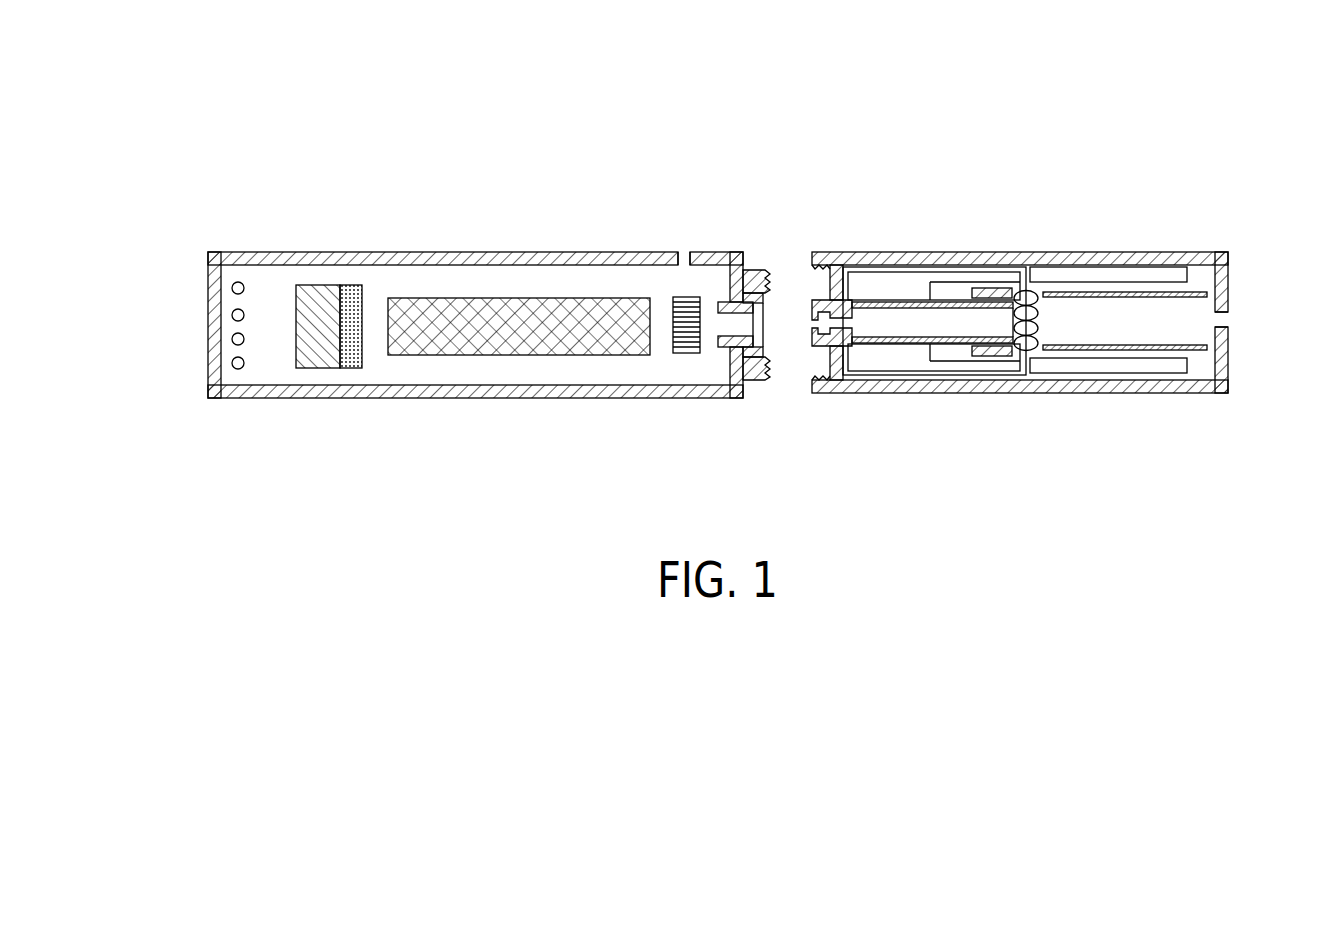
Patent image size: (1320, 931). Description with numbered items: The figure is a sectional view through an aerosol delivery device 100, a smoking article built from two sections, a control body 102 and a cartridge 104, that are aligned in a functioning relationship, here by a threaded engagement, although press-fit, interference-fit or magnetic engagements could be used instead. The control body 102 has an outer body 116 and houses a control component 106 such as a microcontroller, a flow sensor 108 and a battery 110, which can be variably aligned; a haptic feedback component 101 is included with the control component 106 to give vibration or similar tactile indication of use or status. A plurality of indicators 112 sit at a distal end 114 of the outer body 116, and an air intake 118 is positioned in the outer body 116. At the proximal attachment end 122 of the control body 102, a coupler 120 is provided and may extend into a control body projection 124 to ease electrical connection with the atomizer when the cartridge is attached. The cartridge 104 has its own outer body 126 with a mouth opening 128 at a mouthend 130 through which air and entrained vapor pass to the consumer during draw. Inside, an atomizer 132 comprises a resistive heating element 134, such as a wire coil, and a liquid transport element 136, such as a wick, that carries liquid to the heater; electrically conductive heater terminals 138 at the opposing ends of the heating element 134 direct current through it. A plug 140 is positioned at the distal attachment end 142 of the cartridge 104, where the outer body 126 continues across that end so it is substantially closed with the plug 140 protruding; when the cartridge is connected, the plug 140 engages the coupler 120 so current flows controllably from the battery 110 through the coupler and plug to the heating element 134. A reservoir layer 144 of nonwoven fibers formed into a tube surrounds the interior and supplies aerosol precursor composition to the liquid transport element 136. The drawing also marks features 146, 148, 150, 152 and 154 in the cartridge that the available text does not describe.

The aerosol delivery device 100 is at (195, 68).
The haptic feedback component 101 is at (352, 290).
The control body 102 is at (305, 437).
The cartridge 104 is at (1034, 446).
The control component 106 is at (320, 290).
The flow sensor 108 is at (686, 298).
The battery 110 is at (520, 312).
The indicators 112 is at (231, 339).
The distal end 114 is at (217, 203).
The outer body 116 is at (440, 398).
The air intake 118 is at (683, 252).
The coupler 120 is at (721, 342).
The proximal attachment end 122 is at (759, 236).
The control body projection 124 is at (762, 364).
The outer body 126 is at (1012, 393).
The mouth opening 128 is at (1232, 320).
The mouthend 130 is at (1243, 252).
The atomizer 132 is at (1050, 353).
The resistive heating element 134 is at (1032, 293).
The liquid transport element 136 is at (1010, 282).
The heater terminals 138 is at (995, 283).
The plug 140 is at (818, 360).
The distal attachment end 142 is at (804, 238).
The reservoir layer 144 is at (920, 275).
The air flow path 146 is at (1044, 364).
The inner tube 148 is at (947, 326).
The inner tube wall 150 is at (880, 300).
The air channel 152 is at (1192, 348).
The channel wall 154 is at (1200, 385).